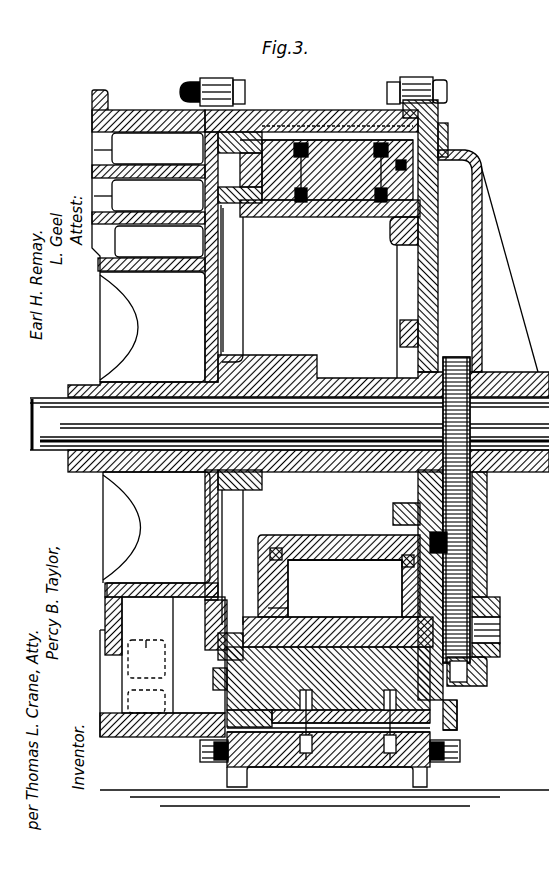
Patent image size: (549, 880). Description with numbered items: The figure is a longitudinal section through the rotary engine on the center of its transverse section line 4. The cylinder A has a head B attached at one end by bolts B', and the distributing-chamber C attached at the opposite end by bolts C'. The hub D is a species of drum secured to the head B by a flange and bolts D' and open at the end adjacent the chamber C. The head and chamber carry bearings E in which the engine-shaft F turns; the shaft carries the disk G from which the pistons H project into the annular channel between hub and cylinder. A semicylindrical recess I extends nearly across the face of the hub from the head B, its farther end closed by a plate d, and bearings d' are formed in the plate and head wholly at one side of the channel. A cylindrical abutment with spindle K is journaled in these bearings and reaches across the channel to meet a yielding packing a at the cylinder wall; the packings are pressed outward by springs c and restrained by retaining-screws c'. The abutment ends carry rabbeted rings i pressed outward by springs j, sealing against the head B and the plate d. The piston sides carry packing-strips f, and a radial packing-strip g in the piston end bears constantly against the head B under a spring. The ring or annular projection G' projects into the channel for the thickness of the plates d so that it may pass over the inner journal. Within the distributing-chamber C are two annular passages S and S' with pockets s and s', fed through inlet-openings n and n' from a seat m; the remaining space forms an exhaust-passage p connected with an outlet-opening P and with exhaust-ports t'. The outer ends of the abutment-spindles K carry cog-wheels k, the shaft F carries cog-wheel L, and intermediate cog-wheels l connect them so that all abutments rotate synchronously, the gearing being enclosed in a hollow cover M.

The seat m is at (100, 90).
The distributing-chamber C is at (148, 235).
The bolts C' is at (210, 80).
The annular passage S is at (157, 148).
The annular passage S' is at (157, 195).
The inlet-opening n is at (111, 150).
The inlet-opening n' is at (113, 196).
The exhaust-passage p is at (170, 469).
The bearings E is at (225, 407).
The engine-shaft F is at (47, 398).
The disk G is at (226, 391).
The annular projection G' is at (243, 143).
The cylinder A is at (290, 113).
The section line 4 is at (336, 130).
The hub D is at (330, 193).
The bolts D' is at (397, 297).
The pistons H is at (353, 178).
The head B is at (420, 415).
The bolts B' is at (425, 83).
The hollow cover M is at (483, 198).
The cog-wheel L is at (455, 356).
The intermediate cog-wheels l is at (462, 538).
The outlet-opening P is at (162, 660).
The pocket s is at (146, 659).
The pocket s' is at (146, 701).
The exhaust-ports t' is at (224, 673).
The semicylindrical recess I is at (328, 547).
The rabbeted rings i is at (276, 548).
The springs j is at (345, 566).
The plate d is at (334, 588).
The bearings d' is at (350, 583).
The packing-strips f is at (342, 647).
The abutment-spindles K is at (500, 628).
The cog-wheels k is at (488, 668).
The packing-strip g is at (470, 696).
The springs c is at (251, 765).
The retaining-screws c' is at (421, 765).
The yielding packing a is at (369, 730).